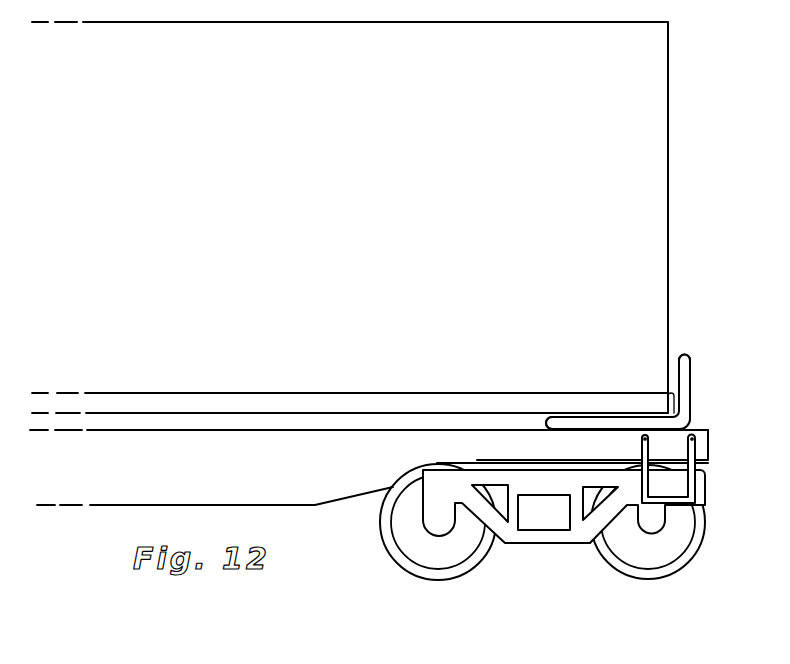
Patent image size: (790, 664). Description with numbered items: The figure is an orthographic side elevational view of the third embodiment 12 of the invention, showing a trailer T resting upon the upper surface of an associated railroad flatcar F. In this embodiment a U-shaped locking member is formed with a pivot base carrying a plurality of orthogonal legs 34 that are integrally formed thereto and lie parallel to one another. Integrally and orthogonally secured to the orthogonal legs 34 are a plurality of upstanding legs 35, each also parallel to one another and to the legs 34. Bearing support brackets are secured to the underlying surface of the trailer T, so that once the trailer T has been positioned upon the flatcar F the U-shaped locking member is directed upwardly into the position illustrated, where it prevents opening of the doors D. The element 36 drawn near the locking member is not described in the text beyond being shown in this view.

The third embodiment 12 is at (695, 390).
The orthogonal legs 34 is at (605, 420).
The upstanding legs 35 is at (692, 356).
The channel member 36 is at (545, 421).
The doors D is at (668, 296).
The trailer T is at (455, 407).
The railroad flatcar F is at (708, 442).